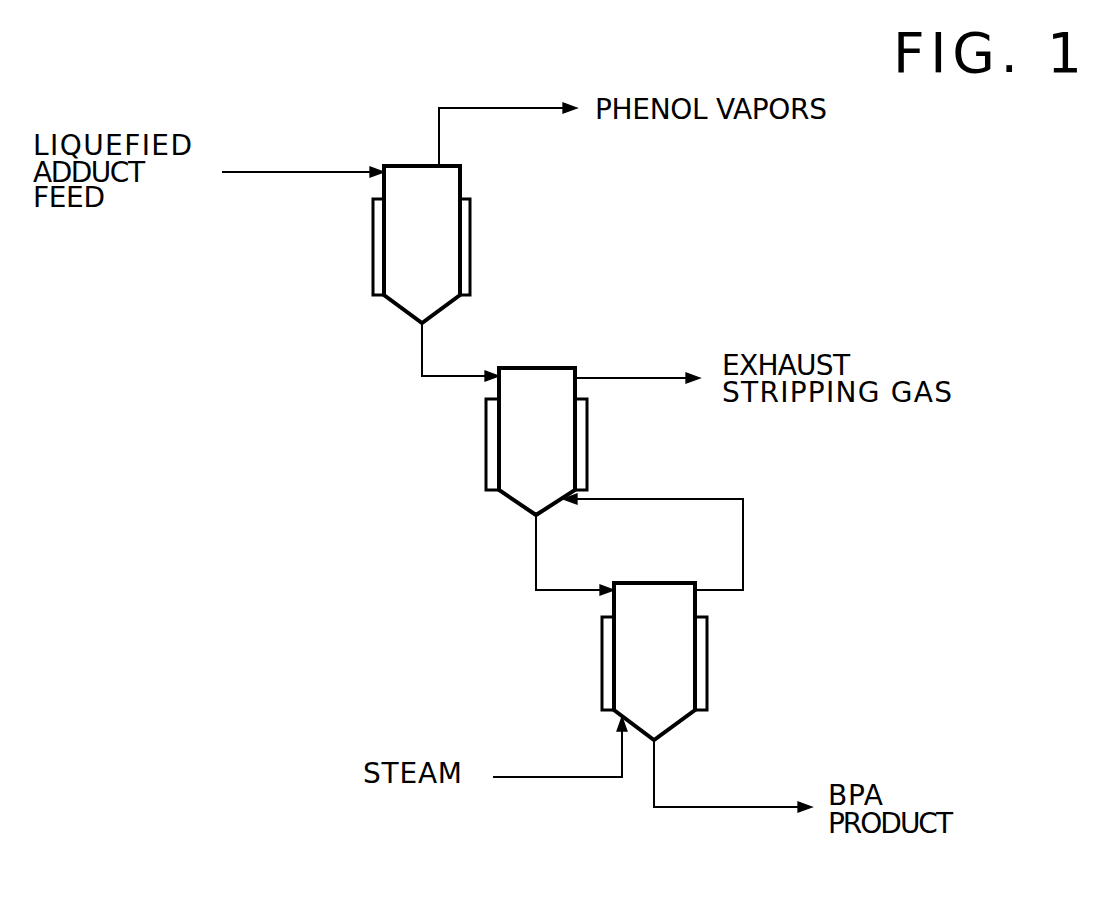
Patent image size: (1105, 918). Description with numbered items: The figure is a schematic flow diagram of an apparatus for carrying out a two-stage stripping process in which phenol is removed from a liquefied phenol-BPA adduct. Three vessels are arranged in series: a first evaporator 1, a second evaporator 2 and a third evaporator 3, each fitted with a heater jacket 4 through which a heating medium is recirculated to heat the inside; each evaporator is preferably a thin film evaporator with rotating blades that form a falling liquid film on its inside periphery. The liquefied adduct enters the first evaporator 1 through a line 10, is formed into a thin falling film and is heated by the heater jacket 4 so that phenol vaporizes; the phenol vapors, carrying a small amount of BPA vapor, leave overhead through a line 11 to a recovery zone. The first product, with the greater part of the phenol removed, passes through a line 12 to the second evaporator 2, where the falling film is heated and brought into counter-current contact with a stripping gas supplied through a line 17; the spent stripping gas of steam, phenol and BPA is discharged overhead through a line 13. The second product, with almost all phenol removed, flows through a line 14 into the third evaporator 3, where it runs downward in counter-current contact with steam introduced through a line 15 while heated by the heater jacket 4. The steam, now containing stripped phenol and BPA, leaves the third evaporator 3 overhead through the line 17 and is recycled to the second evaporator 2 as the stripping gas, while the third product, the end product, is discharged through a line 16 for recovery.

The first evaporator 1 is at (443, 183).
The second evaporator 2 is at (568, 383).
The third evaporator 3 is at (680, 608).
The heater jacket 4 is at (380, 255).
The line 10 is at (293, 172).
The line 11 is at (517, 108).
The line 12 is at (422, 355).
The line 13 is at (620, 378).
The line 14 is at (535, 558).
The line 15 is at (535, 778).
The line 16 is at (745, 809).
The line 17 is at (745, 535).